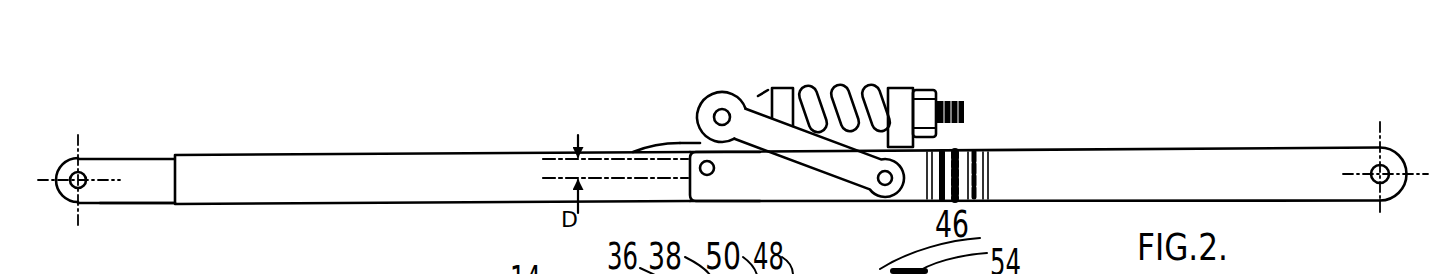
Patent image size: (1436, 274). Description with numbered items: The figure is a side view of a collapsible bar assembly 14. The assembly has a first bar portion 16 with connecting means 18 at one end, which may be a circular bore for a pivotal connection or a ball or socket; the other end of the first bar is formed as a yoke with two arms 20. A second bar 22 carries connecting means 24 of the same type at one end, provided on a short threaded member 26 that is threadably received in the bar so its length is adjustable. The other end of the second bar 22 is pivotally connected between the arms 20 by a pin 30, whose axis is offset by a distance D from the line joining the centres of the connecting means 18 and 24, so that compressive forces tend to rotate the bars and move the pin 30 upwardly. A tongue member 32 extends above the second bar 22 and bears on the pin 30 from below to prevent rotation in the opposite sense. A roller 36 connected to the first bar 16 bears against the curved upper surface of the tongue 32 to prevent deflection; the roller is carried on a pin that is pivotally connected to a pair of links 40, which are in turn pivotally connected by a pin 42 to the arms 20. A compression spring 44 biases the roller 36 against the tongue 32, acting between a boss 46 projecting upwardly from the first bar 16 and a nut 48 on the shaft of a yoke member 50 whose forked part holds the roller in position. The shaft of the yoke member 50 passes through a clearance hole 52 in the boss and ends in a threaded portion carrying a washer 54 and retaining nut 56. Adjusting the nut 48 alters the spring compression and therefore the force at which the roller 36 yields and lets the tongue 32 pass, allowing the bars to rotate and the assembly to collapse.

The bar assembly 14 is at (571, 101).
The first bar portion 16 is at (1088, 162).
The connecting means 18 is at (1370, 170).
The arms 20 is at (760, 188).
The second bar 22 is at (350, 167).
The connecting means 24 is at (82, 162).
The short threaded member 26 is at (130, 205).
The pin 30 is at (708, 176).
The tongue member 32 is at (683, 145).
The roller 36 is at (703, 105).
The links 40 is at (822, 158).
The pin 42 is at (885, 186).
The compression spring 44 is at (893, 88).
The boss 46 is at (847, 88).
The nut 48 is at (797, 88).
The yoke member 50 is at (762, 107).
The clearance hole 52 is at (973, 199).
The washer 54 is at (922, 90).
The retaining nut 56 is at (934, 92).